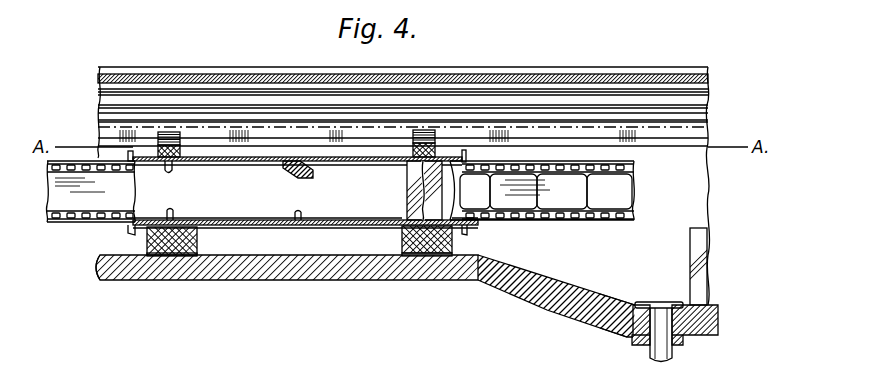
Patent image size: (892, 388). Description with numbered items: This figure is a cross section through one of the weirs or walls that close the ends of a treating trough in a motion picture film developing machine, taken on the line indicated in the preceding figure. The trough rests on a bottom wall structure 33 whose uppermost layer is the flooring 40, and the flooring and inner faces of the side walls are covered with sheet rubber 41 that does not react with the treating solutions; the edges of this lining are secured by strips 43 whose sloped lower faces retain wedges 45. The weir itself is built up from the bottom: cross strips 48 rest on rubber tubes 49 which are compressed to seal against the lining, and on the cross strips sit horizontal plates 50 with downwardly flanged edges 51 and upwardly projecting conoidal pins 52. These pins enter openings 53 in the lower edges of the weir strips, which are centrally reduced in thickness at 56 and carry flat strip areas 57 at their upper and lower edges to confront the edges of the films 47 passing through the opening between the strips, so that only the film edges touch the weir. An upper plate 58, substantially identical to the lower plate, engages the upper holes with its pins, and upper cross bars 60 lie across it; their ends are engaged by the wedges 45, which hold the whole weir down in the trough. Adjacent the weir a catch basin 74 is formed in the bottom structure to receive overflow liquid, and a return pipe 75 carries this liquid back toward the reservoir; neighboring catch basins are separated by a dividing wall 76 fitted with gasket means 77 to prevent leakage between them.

The bottom wall structure 33 is at (551, 292).
The flooring 40 is at (163, 280).
The sheet rubber 41 is at (102, 276).
The strips 43 is at (706, 116).
The wedges 45 is at (483, 125).
The films 47 is at (572, 214).
The cross strips 48 is at (147, 240).
The rubber tubes 49 is at (168, 257).
The horizontal plates 50 is at (275, 228).
The downwardly flanged edges 51 is at (467, 226).
The conoidal pins 52 is at (443, 145).
The openings 53 is at (407, 178).
The centrally reduced portion 56 is at (240, 203).
The flat strip areas 57 is at (233, 163).
The upper plate 58 is at (372, 157).
The upper cross bars 60 is at (158, 142).
The catch basin 74 is at (627, 295).
The return pipes 75 is at (652, 345).
The dividing walls 76 is at (698, 253).
The gasket means 77 is at (708, 300).